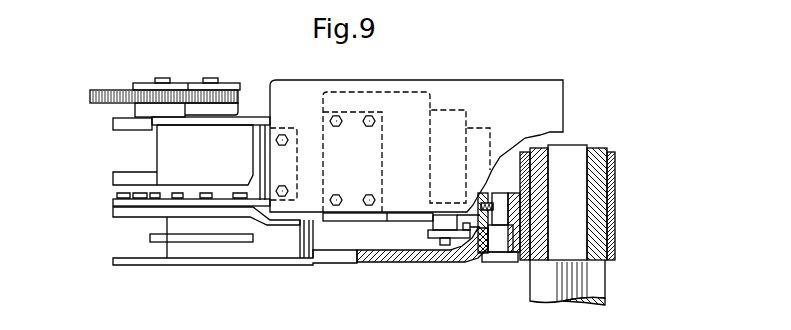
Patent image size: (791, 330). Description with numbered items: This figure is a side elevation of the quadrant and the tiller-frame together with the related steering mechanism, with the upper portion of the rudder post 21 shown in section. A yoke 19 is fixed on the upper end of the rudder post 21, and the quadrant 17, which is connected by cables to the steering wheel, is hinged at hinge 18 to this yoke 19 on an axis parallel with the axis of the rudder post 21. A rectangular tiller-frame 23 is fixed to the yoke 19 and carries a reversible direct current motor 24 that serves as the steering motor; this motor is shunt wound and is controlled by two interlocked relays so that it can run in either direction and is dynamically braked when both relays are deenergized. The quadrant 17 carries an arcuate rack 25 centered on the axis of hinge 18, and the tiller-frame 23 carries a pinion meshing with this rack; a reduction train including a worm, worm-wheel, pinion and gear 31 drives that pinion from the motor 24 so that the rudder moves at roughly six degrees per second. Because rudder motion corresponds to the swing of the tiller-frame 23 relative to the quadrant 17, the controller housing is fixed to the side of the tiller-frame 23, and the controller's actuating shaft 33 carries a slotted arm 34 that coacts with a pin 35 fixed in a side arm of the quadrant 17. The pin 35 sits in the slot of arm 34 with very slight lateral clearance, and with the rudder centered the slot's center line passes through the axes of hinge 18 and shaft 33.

The quadrant 17 is at (135, 257).
The hinge 18 is at (507, 242).
The yoke 19 is at (615, 213).
The rudder post 21 is at (238, 97).
The tiller-frame 23 is at (501, 92).
The reversible direct current motor 24 is at (352, 220).
The arcuate rack 25 is at (263, 223).
The gear 31 is at (90, 96).
The actuating shaft 33 is at (447, 245).
The slotted arm 34 is at (432, 235).
The pin 35 is at (463, 260).